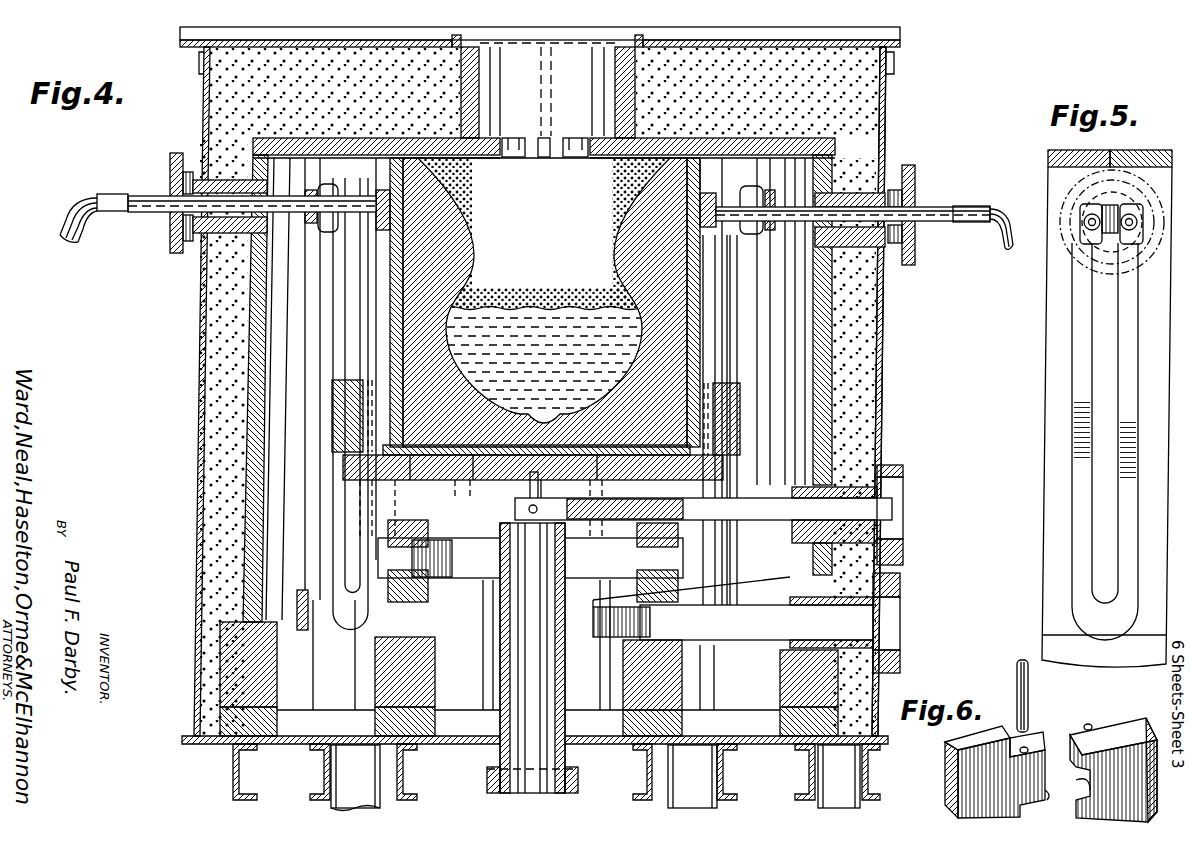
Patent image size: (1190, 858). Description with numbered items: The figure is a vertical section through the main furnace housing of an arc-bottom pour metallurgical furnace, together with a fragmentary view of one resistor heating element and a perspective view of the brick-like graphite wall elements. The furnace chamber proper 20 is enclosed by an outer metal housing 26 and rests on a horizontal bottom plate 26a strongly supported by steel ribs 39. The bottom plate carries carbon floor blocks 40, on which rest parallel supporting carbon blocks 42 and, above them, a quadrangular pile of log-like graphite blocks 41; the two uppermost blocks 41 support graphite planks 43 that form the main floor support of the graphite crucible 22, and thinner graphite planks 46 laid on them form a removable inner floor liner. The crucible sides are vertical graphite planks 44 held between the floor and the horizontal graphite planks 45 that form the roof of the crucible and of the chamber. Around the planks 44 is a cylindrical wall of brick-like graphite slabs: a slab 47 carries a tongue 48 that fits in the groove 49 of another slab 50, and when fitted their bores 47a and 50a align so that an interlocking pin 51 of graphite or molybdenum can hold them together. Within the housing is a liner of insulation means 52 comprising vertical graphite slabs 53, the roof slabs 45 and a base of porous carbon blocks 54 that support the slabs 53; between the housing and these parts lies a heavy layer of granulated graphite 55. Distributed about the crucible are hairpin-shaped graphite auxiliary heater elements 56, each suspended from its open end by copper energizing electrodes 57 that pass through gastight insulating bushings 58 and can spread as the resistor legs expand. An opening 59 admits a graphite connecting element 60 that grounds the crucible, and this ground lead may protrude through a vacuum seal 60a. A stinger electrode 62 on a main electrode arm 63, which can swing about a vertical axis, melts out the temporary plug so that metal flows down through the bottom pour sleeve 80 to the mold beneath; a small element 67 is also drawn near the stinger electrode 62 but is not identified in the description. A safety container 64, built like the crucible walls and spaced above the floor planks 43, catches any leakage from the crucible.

In FIG. 4, the furnace chamber proper 20 is at (890, 365).
In FIG. 4, the graphite crucible 22 is at (699, 189).
In FIG. 4, the outer metal housing 26 is at (893, 118).
In FIG. 4, the bottom plate 26a is at (584, 748).
In FIG. 4, the steel ribs 39 is at (322, 772).
In FIG. 4, the carbon floor blocks 40 is at (331, 706).
In FIG. 4, the graphite blocks 41 is at (424, 504).
In FIG. 4, the supporting carbon blocks 42 is at (423, 656).
In FIG. 4, the graphite planks 43 is at (416, 481).
In FIG. 4, the vertical graphite planks 44 is at (397, 150).
In FIG. 4, the horizontal graphite planks 45 is at (648, 150).
In FIG. 4, the thinner graphite planks 46 is at (600, 446).
In FIG. 4, the graphite slab 47 is at (329, 186).
In FIG. 6, the graphite slab 47 is at (945, 752).
In FIG. 6, the bore 47a is at (1026, 748).
In FIG. 6, the tongue 48 is at (1046, 798).
In FIG. 6, the groove 49 is at (1089, 780).
In FIG. 4, the graphite slab 50 is at (383, 190).
In FIG. 6, the graphite slab 50 is at (1133, 736).
In FIG. 6, the bore 50a is at (1090, 725).
In FIG. 6, the interlocking pin 51 is at (1017, 665).
In FIG. 4, the liner of insulation means 52 is at (287, 136).
In FIG. 4, the graphite slabs 53 is at (247, 424).
In FIG. 4, the porous carbon blocks 54 is at (220, 648).
In FIG. 4, the granulated graphite 55 is at (250, 73).
In FIG. 4, the auxiliary heater elements 56 is at (311, 190).
In FIG. 5, the auxiliary heater elements 56 is at (1088, 303).
In FIG. 4, the copper energizing electrode 57 is at (146, 196).
In FIG. 5, the copper energizing electrode 57 is at (1128, 224).
In FIG. 4, the gastight insulating bushings 58 is at (192, 227).
In FIG. 5, the gastight insulating bushings 58 is at (1100, 198).
In FIG. 4, the opening 59 is at (900, 596).
In FIG. 4, the graphite connecting element 60 is at (877, 623).
In FIG. 4, the vacuum seal 60a is at (902, 658).
In FIG. 4, the stinger electrode 62 is at (528, 488).
In FIG. 4, the main electrode arm 63 is at (891, 513).
In FIG. 4, the safety container 64 is at (740, 408).
In FIG. 4, the pin 67 is at (545, 504).
In FIG. 4, the bottom pour sleeve 80 is at (500, 757).